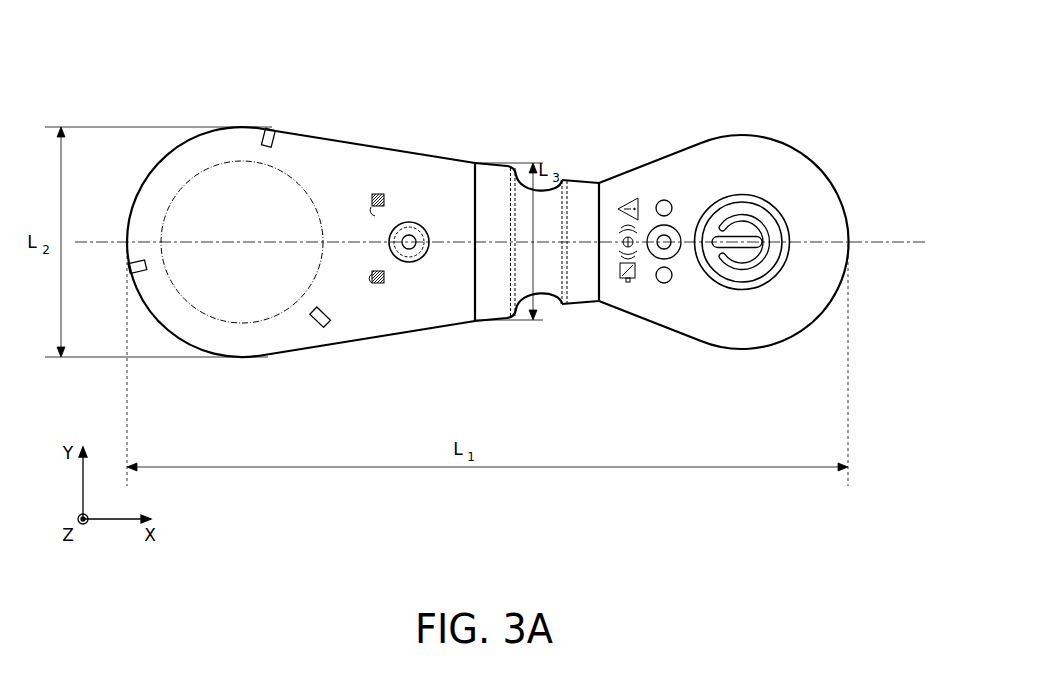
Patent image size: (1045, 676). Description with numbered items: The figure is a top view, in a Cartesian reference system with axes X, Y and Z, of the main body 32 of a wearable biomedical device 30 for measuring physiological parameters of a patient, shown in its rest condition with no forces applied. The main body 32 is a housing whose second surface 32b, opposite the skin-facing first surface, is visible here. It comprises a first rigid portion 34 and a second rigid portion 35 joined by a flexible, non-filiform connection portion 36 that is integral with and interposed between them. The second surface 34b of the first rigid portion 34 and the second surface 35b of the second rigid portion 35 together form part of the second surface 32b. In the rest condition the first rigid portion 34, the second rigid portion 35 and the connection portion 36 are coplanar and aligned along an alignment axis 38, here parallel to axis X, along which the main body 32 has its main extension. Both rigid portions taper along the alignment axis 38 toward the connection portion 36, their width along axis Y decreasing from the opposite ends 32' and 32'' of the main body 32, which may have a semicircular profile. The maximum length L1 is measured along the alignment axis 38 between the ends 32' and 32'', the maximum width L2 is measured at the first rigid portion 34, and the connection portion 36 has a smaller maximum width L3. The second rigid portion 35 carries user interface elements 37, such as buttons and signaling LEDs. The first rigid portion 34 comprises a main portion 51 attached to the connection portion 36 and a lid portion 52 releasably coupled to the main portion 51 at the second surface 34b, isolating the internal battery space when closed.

The biomedical device 30 is at (190, 86).
The main body 32 is at (368, 369).
The first end of the main body 32' is at (168, 242).
The second end of the main body 32'' is at (803, 242).
The second surface of the main body 32b is at (435, 166).
The first rigid portion 34 is at (445, 312).
The second surface of the first rigid portion 34b is at (407, 303).
The second rigid portion 35 is at (688, 320).
The second surface of the second rigid portion 35b is at (770, 308).
The connection portion 36 is at (580, 293).
The user interface elements 37 is at (709, 169).
The alignment axis 38 is at (850, 241).
The main portion 51 is at (363, 155).
The lid portion 52 is at (250, 140).